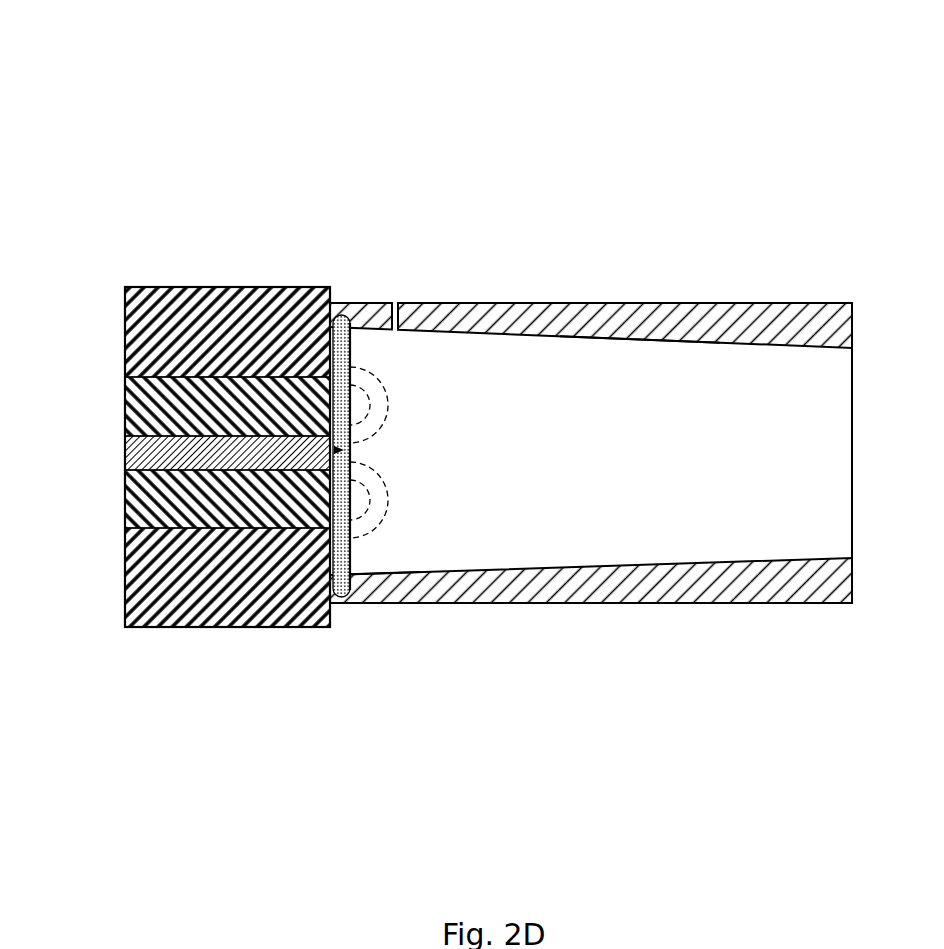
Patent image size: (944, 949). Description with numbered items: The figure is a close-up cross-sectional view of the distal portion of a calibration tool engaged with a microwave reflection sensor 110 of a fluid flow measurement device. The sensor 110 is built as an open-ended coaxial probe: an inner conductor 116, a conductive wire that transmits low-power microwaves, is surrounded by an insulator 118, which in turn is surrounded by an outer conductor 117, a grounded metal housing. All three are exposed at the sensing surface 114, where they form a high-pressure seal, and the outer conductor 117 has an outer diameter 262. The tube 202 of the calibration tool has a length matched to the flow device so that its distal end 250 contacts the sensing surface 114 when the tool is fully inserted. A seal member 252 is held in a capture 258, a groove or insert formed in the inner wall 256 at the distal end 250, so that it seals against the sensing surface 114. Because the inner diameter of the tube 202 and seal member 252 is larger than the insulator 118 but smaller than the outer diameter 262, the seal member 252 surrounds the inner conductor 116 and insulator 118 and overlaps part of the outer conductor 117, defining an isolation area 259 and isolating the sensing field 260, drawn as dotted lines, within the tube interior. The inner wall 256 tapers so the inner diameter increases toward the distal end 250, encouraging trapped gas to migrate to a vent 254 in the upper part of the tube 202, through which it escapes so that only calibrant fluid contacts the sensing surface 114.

The microwave reflection sensor 110 is at (244, 336).
The sensing surface 114 is at (332, 605).
The inner conductor 116 is at (122, 452).
The outer conductor 117 is at (122, 323).
The insulator 118 is at (122, 407).
The tube 202 is at (591, 407).
The distal end 250 is at (411, 356).
The seal member 252 is at (350, 407).
The vent 254 is at (398, 300).
The inner wall 256 is at (642, 342).
The capture 258 is at (355, 575).
The isolation area 259 is at (337, 392).
The sensing field 260 is at (373, 438).
The outer diameter 262 is at (244, 443).